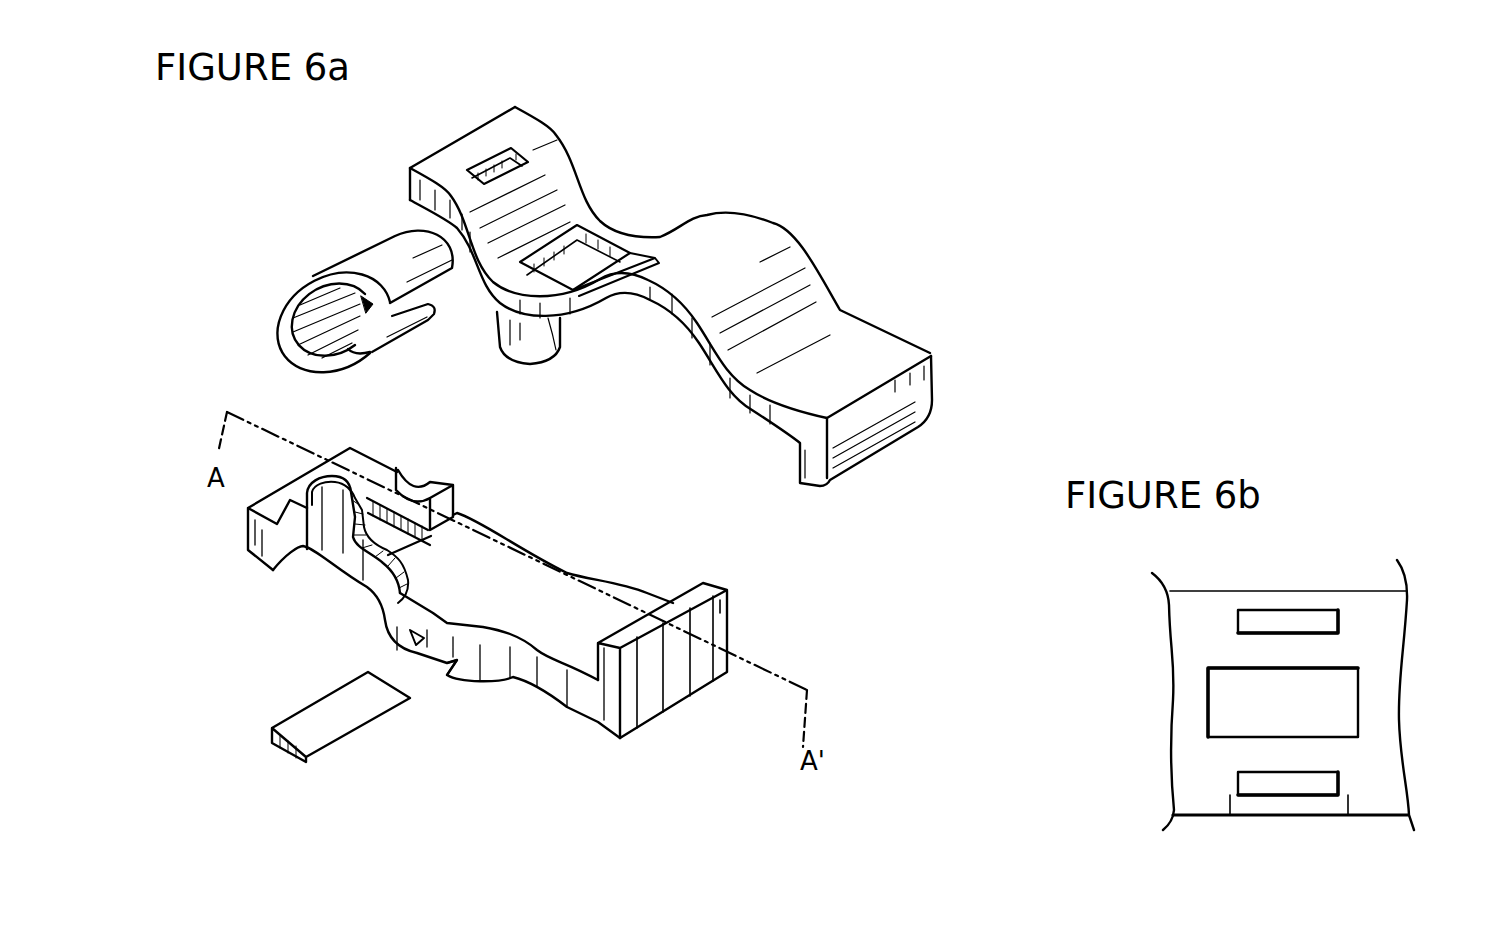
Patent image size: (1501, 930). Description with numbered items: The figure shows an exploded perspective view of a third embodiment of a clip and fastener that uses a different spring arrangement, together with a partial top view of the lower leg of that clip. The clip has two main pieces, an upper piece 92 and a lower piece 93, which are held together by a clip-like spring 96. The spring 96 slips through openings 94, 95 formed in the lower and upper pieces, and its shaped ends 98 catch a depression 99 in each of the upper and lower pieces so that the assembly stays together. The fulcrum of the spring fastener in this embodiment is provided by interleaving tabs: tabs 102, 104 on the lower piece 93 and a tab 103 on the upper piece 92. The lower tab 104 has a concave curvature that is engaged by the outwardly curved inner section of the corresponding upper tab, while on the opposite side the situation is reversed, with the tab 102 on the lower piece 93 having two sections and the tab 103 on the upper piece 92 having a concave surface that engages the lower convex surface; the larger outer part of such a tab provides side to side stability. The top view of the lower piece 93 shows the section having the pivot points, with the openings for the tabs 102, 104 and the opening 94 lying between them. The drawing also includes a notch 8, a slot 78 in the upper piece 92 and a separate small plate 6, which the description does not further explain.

In FIG. 6A, the insert plate 6 is at (350, 737).
In FIG. 6A, the notch 8 is at (435, 657).
In FIG. 6A, the slot 78 is at (508, 152).
In FIG. 6A, the upper piece 92 is at (885, 342).
In FIG. 6A, the lower piece 93 is at (511, 581).
In FIG. 6B, the lower piece 93 is at (1398, 675).
In FIG. 6A, the opening 94 is at (410, 557).
In FIG. 6B, the opening 94 is at (1253, 723).
In FIG. 6A, the opening 95 is at (590, 237).
In FIG. 6A, the clip-like spring 96 is at (349, 245).
In FIG. 6A, the shaped end 98 is at (370, 320).
In FIG. 6A, the depression 99 is at (630, 258).
In FIG. 6A, the tab 102 is at (320, 520).
In FIG. 6B, the tab 102 is at (1315, 792).
In FIG. 6A, the tab 103 is at (556, 338).
In FIG. 6A, the tab 104 is at (407, 480).
In FIG. 6B, the tab 104 is at (1342, 608).